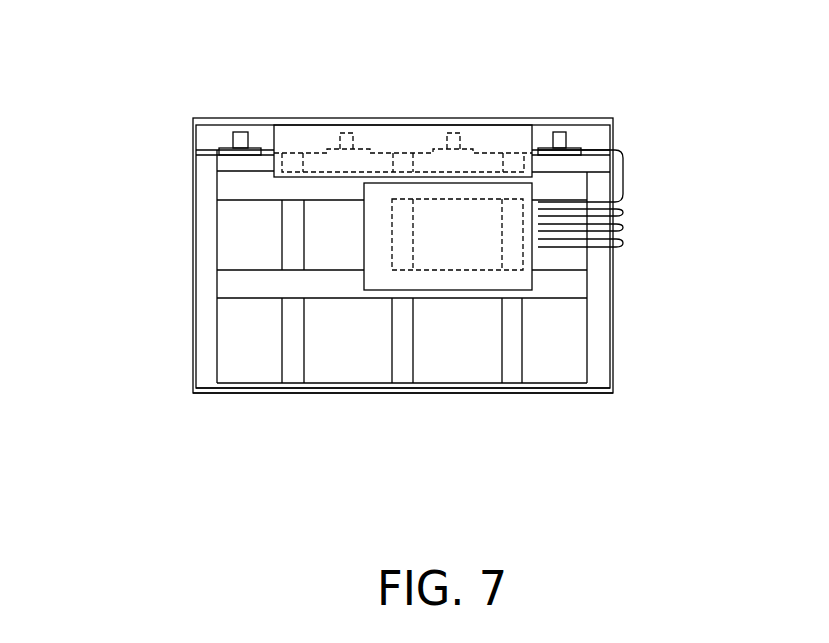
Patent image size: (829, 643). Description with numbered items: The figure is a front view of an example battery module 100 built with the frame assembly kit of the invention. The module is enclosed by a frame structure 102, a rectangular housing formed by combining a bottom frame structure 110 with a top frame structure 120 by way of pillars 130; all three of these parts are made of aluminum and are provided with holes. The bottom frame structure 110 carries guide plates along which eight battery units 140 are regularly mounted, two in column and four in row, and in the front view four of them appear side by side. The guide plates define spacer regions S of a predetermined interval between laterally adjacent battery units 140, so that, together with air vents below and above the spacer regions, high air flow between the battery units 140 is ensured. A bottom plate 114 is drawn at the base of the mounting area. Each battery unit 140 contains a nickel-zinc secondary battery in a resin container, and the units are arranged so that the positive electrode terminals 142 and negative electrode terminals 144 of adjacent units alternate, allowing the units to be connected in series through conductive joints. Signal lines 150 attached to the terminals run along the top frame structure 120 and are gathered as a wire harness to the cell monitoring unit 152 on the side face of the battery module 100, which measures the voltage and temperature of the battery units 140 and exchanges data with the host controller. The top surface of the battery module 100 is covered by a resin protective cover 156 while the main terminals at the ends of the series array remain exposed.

The battery module 100 is at (411, 236).
The frame structure 102 is at (182, 214).
The bottom frame structure 110 is at (226, 398).
The bottom plate 114 is at (270, 385).
The top frame structure 120 is at (216, 160).
The pillars 130 is at (217, 325).
The battery units 140 is at (245, 358).
The positive electrode terminal 142 is at (240, 142).
The negative electrode terminal 144 is at (563, 133).
The signal lines 150 is at (563, 236).
The cell monitoring unit (CMU) 152 is at (467, 227).
The resin protective cover 156 is at (400, 132).
The spacer regions S is at (293, 357).